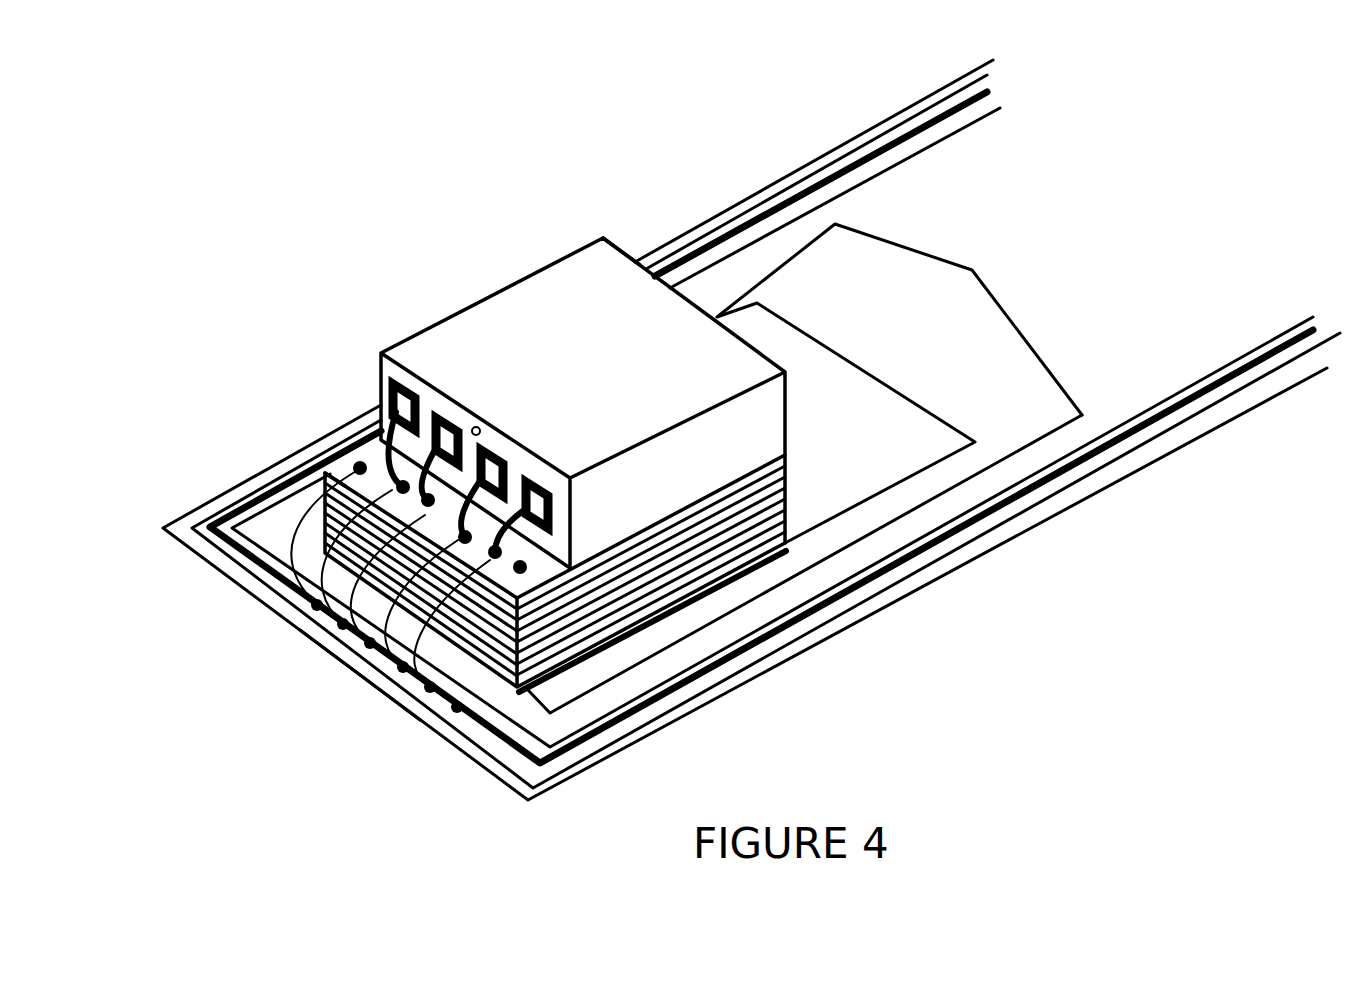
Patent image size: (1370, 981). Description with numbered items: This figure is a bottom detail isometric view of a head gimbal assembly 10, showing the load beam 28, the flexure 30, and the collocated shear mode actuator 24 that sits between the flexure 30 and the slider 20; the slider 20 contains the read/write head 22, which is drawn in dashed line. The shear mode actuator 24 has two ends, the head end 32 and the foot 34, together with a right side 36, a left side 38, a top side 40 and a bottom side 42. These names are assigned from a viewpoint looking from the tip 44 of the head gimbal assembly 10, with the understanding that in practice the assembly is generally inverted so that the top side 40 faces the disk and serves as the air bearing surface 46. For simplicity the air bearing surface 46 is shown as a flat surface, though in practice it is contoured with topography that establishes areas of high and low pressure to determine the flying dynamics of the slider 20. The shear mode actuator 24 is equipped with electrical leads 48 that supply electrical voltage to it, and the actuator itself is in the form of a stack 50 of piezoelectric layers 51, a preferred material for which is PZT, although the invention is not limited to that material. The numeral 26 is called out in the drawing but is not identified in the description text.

The head gimbal assembly 10 is at (395, 183).
The slider 20 is at (473, 277).
The read/write head 22 is at (473, 424).
The shear mode actuator 24 is at (760, 435).
The leads 26 is at (437, 297).
The load beam 28 is at (1068, 512).
The flexure 30 is at (903, 430).
The head end 32 is at (482, 683).
The foot 34 is at (626, 232).
The right side 36 is at (800, 508).
The left side 38 is at (326, 465).
The top side 40 is at (377, 457).
The bottom side 42 is at (680, 622).
The tip 44 is at (360, 690).
The air bearing surface 46 is at (598, 398).
The electrical leads 48 is at (322, 563).
The stack 50 is at (805, 597).
The piezoelectric layers 51 is at (565, 697).